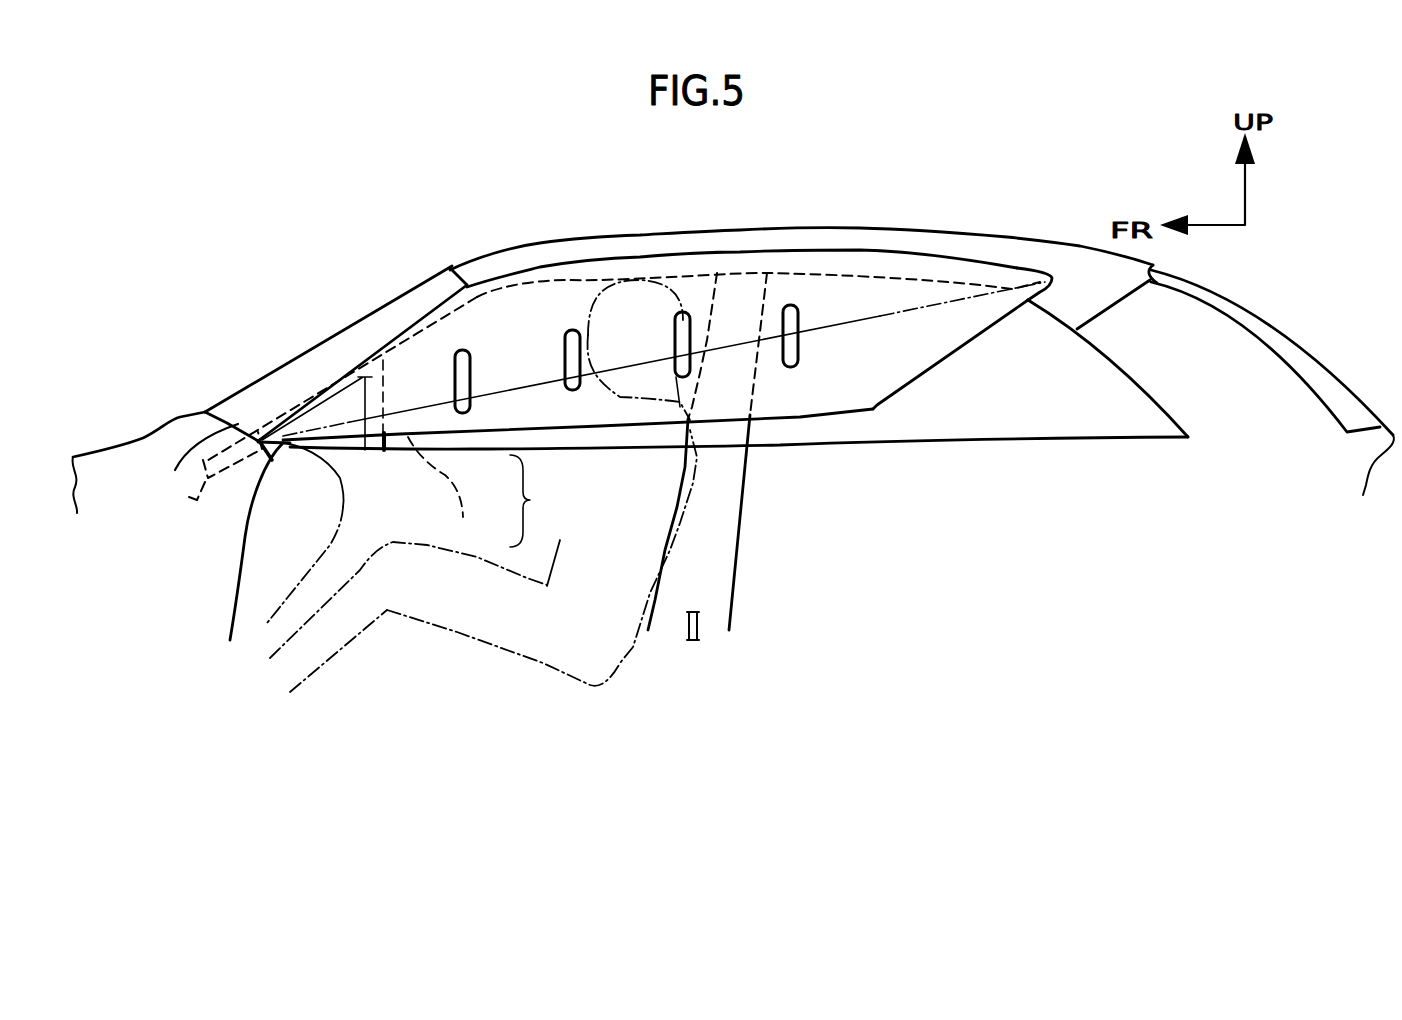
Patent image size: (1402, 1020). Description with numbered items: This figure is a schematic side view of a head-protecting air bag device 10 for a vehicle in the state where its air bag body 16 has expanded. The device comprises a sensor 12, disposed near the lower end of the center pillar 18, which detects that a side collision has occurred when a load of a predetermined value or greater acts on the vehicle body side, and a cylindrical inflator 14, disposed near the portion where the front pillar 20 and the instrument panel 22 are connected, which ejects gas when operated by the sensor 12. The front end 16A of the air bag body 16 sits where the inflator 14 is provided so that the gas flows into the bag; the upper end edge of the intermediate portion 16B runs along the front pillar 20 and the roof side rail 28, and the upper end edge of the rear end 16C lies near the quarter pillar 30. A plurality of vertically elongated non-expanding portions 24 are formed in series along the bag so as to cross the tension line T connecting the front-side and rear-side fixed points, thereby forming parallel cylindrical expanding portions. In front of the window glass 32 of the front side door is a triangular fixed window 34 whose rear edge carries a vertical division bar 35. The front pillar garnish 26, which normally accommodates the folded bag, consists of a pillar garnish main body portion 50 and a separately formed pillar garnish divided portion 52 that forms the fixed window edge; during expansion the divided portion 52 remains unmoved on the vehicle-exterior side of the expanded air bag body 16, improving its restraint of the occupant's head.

The head-protecting air bag device 10 is at (732, 336).
The sensor 12 is at (721, 478).
The cylindrical inflator 14 is at (222, 519).
The air bag body 16 is at (753, 293).
The front end of air bag body 16A is at (341, 379).
The intermediate portion of air bag body 16B is at (638, 404).
The rear end of air bag body 16C is at (1010, 232).
The center pillar 18 is at (578, 459).
The front pillar 20 is at (336, 346).
The instrument panel 22 is at (435, 477).
The non-expanding portions 24 is at (658, 358).
The front pillar garnish 26 is at (533, 501).
The roof side rail 28 is at (801, 215).
The quarter pillar 30 is at (1108, 368).
The window glass 32 is at (483, 550).
The fixed window 34 is at (287, 541).
The division bar 35 is at (421, 301).
The pillar garnish main body portion 50 is at (384, 436).
The pillar garnish divided portion 52 is at (445, 453).
The tension line T is at (664, 359).